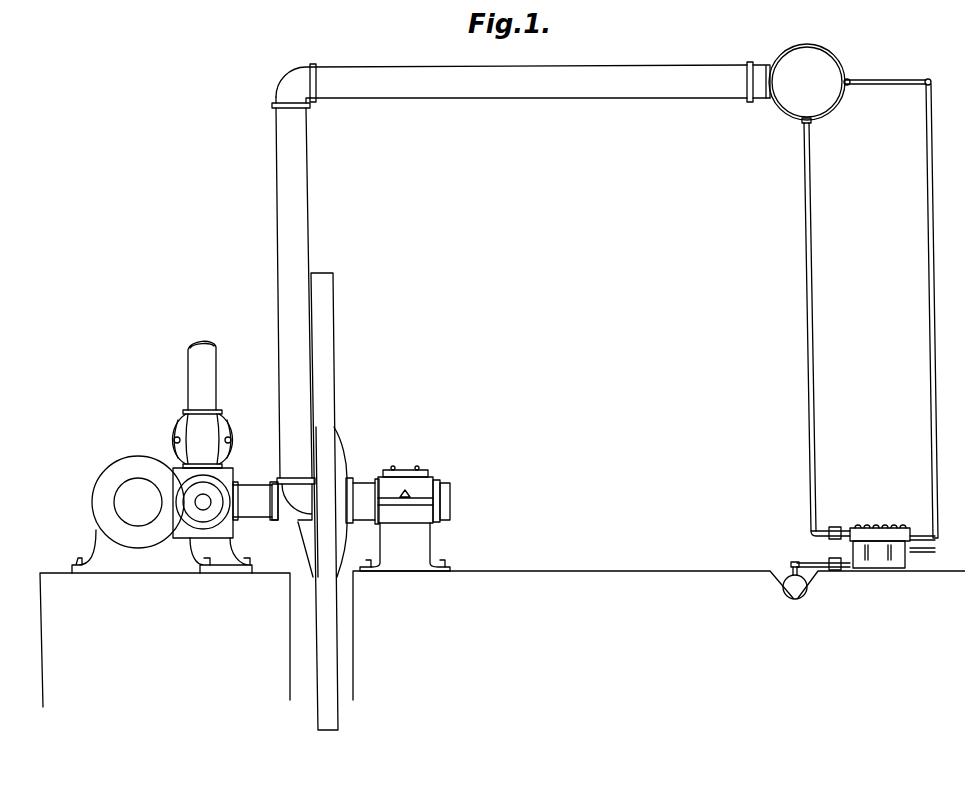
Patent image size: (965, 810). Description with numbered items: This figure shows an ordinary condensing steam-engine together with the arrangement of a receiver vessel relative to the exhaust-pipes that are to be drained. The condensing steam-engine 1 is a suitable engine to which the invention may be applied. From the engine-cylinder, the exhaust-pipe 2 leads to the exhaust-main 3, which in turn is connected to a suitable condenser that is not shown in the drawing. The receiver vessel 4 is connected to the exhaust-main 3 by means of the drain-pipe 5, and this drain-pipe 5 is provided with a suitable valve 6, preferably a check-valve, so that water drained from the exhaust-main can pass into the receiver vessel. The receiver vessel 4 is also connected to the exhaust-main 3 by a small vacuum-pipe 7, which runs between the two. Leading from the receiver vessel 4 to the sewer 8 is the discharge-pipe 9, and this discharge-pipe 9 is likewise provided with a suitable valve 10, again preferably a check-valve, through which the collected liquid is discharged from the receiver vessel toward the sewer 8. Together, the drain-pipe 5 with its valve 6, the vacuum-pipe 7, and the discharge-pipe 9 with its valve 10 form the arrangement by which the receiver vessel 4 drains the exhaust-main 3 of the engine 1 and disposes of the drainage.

The condensing steam-engine 1 is at (172, 434).
The exhaust-pipe 2 is at (521, 270).
The exhaust-main 3 is at (805, 83).
The receiver vessel 4 is at (884, 540).
The drain-pipe 5 is at (807, 341).
The valve 6 is at (836, 527).
The vacuum-pipe 7 is at (929, 329).
The sewer 8 is at (784, 589).
The discharge-pipe 9 is at (800, 562).
The valve 10 is at (832, 559).